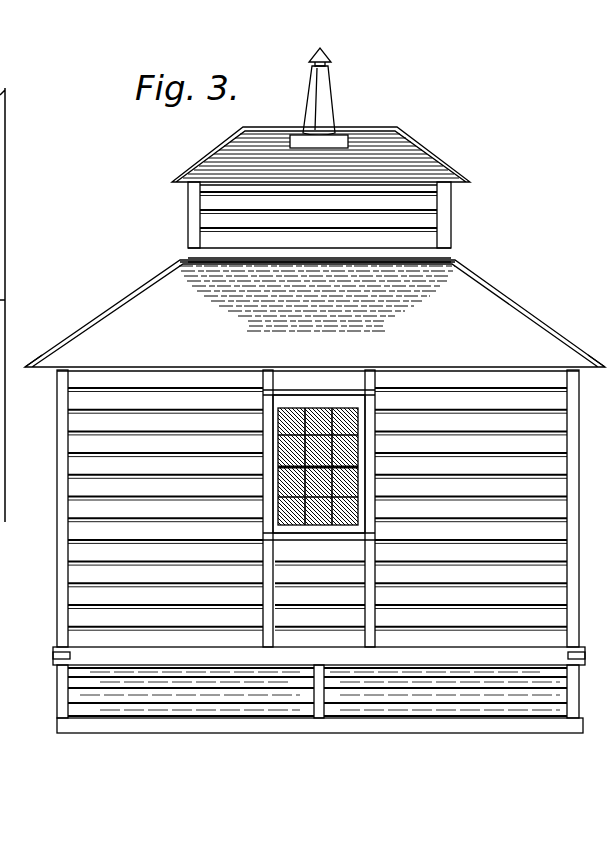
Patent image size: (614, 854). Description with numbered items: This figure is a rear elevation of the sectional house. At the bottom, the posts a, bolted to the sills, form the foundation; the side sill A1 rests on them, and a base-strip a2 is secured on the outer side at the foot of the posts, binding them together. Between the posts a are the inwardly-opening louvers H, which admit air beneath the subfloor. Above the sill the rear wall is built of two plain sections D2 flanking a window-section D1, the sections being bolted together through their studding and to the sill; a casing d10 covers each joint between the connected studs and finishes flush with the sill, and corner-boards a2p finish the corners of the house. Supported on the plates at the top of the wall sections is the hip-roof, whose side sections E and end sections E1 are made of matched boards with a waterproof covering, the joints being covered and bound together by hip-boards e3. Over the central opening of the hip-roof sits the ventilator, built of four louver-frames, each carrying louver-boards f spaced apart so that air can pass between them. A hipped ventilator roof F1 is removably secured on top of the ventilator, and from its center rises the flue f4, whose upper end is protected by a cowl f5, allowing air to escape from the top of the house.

The cowl f5 is at (323, 50).
The flue f4 is at (333, 92).
The end section of hip-roof E1 is at (307, 170).
The ventilator roof F1 is at (455, 220).
The louver-board f is at (212, 222).
The side section of hip-roof E is at (295, 351).
The hip-board e3 is at (84, 338).
The corner posts a'' a2p is at (57, 530).
The plain section D2 is at (108, 525).
The casing d10 is at (365, 548).
The window-section D1 is at (322, 610).
The side sill A1 is at (100, 655).
The post a is at (58, 693).
The base-strip a2 is at (125, 728).
The louver H is at (205, 683).